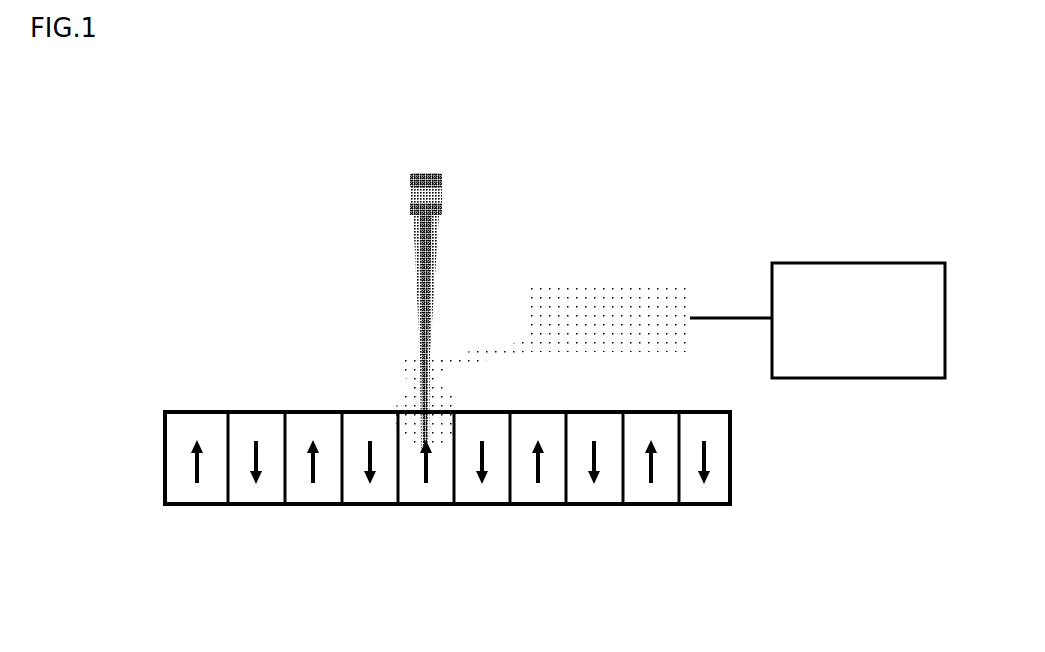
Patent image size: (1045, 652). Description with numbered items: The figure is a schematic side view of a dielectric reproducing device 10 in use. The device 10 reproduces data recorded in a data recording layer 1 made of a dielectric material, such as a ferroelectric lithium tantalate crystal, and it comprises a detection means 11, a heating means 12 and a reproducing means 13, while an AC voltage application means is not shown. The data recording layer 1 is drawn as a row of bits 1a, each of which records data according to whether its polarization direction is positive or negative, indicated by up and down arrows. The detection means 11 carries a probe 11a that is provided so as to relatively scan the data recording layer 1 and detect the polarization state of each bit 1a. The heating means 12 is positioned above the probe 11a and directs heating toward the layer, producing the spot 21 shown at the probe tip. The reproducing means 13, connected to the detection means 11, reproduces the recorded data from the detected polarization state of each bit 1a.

The data recording layer 1 is at (732, 457).
The bit 1a is at (478, 495).
The dielectric reproducing device 10 is at (148, 156).
The detection means 11 is at (607, 285).
The probe 11a is at (415, 381).
The heating means 12 is at (425, 165).
The reproducing means 13 is at (858, 263).
The heated spot 21 is at (427, 433).